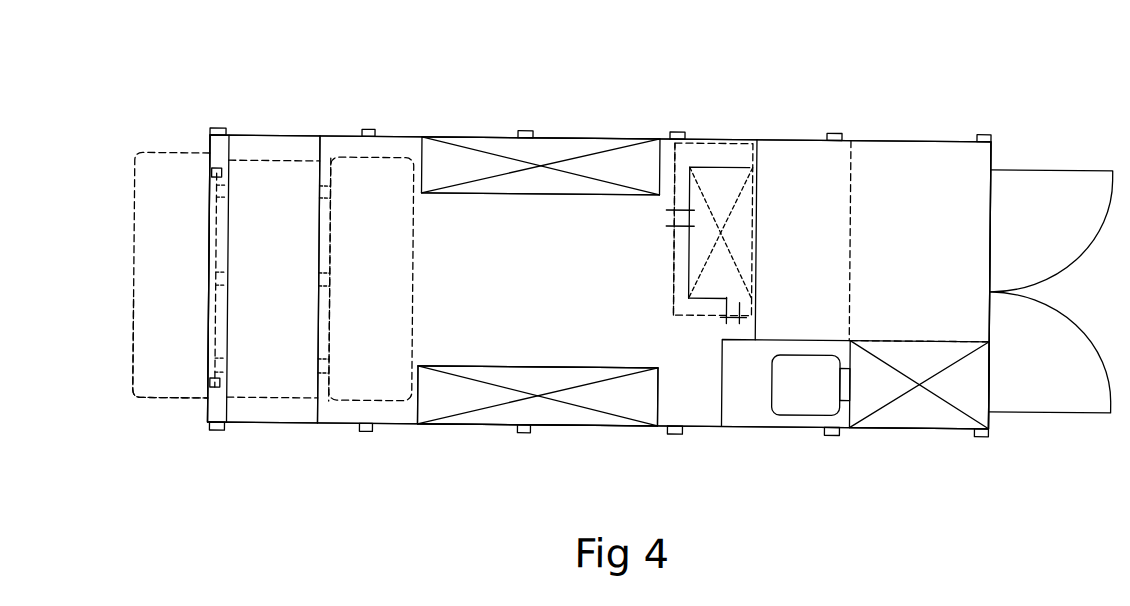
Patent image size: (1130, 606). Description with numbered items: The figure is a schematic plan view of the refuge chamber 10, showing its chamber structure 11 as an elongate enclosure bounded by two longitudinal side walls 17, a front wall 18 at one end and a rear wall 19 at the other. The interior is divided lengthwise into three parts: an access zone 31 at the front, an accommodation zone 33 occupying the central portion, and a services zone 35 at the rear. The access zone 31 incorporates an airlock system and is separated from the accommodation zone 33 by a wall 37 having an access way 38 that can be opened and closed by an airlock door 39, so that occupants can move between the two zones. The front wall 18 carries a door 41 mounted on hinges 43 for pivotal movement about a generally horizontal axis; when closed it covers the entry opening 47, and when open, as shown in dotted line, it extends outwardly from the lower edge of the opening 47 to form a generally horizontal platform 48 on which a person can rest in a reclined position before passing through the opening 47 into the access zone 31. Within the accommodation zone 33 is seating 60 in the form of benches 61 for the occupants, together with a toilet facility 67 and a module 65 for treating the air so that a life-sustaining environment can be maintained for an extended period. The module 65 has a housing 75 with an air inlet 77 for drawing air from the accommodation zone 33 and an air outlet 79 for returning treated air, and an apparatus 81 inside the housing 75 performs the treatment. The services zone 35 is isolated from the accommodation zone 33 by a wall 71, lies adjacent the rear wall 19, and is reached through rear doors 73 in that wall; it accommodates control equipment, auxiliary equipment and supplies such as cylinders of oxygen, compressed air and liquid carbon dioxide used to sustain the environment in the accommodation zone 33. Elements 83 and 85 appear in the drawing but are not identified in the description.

The refuge chamber 10 is at (172, 113).
The chamber structure 11 is at (622, 131).
The longitudinal side walls 17 is at (550, 135).
The front wall 18 is at (210, 407).
The rear wall 19 is at (993, 150).
The access zone 31 is at (278, 183).
The accommodation zone 33 is at (605, 200).
The services zone 35 is at (915, 162).
The wall 37 is at (320, 175).
The access way 38 is at (327, 223).
The airlock door 39 is at (392, 171).
The door 41 is at (150, 360).
The hinges 43 is at (213, 172).
The entry opening 47 is at (213, 347).
The platform 48 is at (157, 214).
The seating 60 is at (563, 412).
The benches 61 is at (647, 158).
The module 65 is at (718, 148).
The toilet facility 67 is at (790, 388).
The wall 71 is at (763, 188).
The rear doors 73 is at (1075, 162).
The housing 75 is at (675, 259).
The air inlet 77 is at (737, 323).
The air outlet 79 is at (668, 212).
The apparatus 81 is at (688, 278).
The faucet 83 is at (730, 290).
The shower area 85 is at (690, 213).